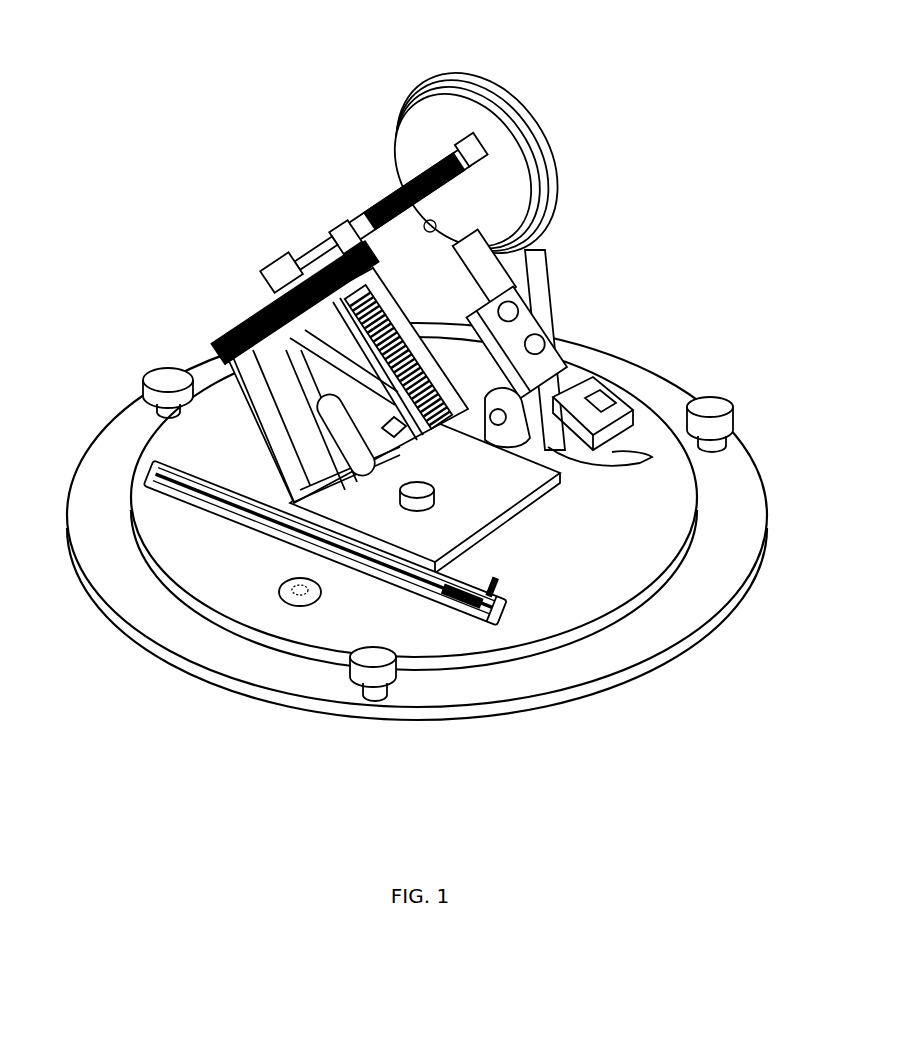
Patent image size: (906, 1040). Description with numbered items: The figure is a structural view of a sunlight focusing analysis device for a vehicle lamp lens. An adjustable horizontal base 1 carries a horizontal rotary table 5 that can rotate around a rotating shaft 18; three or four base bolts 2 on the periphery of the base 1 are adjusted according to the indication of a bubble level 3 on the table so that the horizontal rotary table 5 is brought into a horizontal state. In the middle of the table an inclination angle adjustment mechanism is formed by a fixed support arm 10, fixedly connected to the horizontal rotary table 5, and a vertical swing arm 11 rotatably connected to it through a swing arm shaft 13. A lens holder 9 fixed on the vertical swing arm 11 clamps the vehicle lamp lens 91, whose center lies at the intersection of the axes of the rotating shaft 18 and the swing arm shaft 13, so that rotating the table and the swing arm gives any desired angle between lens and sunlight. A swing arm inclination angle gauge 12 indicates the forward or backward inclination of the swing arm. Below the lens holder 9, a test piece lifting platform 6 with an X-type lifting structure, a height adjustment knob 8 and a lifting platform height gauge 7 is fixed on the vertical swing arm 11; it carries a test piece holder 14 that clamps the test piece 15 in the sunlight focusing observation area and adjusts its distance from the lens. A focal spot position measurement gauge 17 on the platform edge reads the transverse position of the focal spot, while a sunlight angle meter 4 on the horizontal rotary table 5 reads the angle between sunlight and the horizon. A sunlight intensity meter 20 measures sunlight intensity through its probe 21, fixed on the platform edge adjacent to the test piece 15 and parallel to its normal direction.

The base 1 is at (447, 712).
The base bolt 2 is at (358, 683).
The bubble level 3 is at (294, 588).
The sunlight angle meter 4 is at (167, 477).
The horizontal rotary table 5 is at (215, 462).
The test piece lifting platform 6 is at (265, 408).
The lifting platform height gauge 7 is at (233, 318).
The height adjustment knob 8 is at (268, 265).
The lens holder 9 is at (362, 216).
The fixed support arm 10 is at (425, 82).
The vertical swing arm 11 is at (410, 131).
The swing arm inclination angle gauge 12 is at (512, 98).
The swing arm shaft 13 is at (472, 170).
The test piece holder 14 is at (518, 329).
The test piece 15 is at (435, 295).
The focal spot position measurement gauge 17 is at (441, 425).
The rotating shaft 18 is at (420, 506).
The sunlight intensity meter 20 is at (618, 427).
The probe 21 is at (500, 416).
The vehicle lamp lens 91 is at (428, 226).